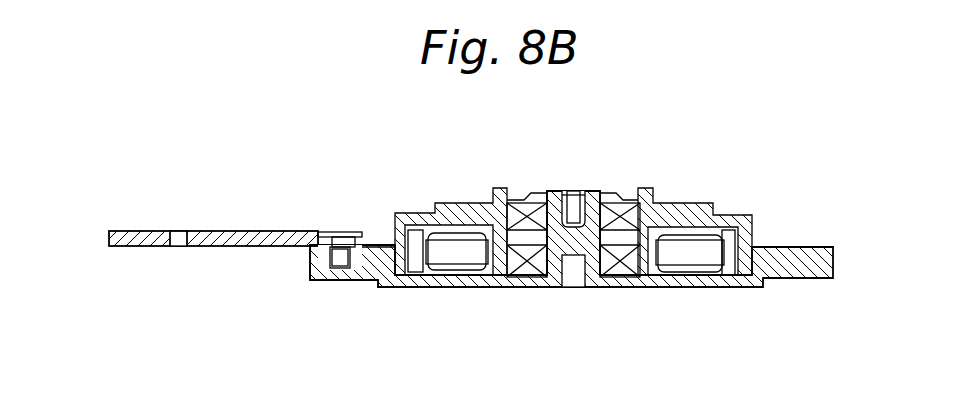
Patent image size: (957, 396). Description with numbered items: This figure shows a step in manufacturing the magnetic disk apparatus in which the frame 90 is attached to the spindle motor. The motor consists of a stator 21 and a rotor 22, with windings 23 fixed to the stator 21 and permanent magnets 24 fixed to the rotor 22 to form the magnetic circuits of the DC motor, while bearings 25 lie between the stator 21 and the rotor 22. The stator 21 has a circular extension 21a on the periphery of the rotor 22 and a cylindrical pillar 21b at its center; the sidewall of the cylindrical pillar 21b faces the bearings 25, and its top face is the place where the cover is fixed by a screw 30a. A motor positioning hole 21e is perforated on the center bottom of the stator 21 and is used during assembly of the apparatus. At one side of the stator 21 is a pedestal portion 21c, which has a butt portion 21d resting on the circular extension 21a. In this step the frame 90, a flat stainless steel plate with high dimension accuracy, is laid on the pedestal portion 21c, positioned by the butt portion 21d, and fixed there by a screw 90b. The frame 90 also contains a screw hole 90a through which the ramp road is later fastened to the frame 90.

The stator 21 is at (444, 288).
The circular extension 21a is at (362, 262).
The cylindrical pillar 21b is at (549, 203).
The pedestal portion 21c is at (316, 278).
The butt portion 21d is at (377, 243).
The motor positioning hole 21e is at (580, 276).
The rotor 22 is at (449, 212).
The windings 23 is at (472, 248).
The permanent magnets 24 is at (413, 235).
The bearings 25 is at (527, 212).
The screw 30a is at (576, 210).
The frame 90 is at (215, 247).
The screw hole 90a is at (182, 237).
The screw 90b is at (340, 258).